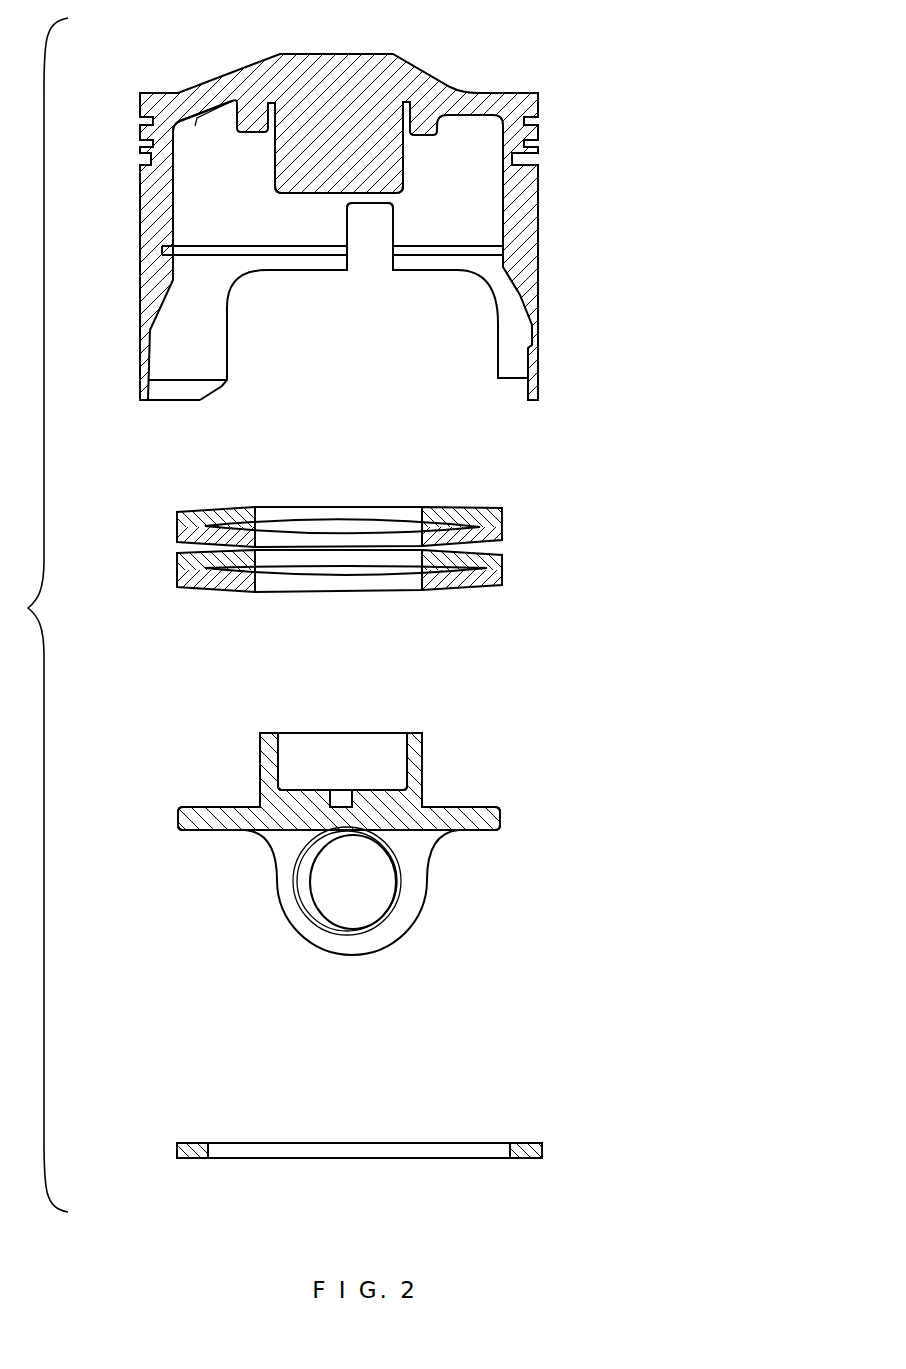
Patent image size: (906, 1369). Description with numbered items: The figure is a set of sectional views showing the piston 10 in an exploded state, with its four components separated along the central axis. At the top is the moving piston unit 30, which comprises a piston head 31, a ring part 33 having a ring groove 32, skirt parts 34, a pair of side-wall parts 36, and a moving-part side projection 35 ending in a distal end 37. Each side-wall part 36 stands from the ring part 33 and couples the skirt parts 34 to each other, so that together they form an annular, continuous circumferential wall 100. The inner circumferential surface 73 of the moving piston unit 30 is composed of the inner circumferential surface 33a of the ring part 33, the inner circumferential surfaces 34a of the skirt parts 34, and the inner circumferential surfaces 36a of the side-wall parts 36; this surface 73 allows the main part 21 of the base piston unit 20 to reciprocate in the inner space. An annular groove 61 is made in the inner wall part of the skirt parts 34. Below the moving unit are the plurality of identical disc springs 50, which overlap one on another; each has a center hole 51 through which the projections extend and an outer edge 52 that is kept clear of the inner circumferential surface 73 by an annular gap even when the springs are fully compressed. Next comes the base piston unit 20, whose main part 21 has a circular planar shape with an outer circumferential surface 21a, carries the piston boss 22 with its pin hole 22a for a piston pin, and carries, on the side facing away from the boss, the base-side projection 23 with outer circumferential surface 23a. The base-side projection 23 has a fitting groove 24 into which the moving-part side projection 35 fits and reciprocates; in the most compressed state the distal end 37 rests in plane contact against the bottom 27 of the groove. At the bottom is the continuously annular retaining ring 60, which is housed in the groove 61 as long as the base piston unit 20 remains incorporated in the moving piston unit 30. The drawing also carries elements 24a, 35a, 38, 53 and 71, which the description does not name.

The piston 10 is at (360, 535).
The base piston unit 20 is at (338, 839).
The main part 21 is at (492, 821).
The outer circumferential surface 21a is at (502, 815).
The piston boss 22 is at (378, 942).
The pin hole 22a is at (348, 928).
The base-side projection 23 is at (418, 750).
The outer circumferential surface 23a is at (260, 757).
The fitting groove 24 is at (335, 740).
The inner wall surface 24a is at (400, 755).
The bottom 27 is at (300, 788).
The moving piston unit 30 is at (548, 220).
The piston head 31 is at (323, 57).
The ring groove 32 is at (149, 143).
The ring part 33 is at (151, 160).
The inner circumferential surface 33a is at (176, 137).
The skirt parts 34 is at (140, 237).
The inner circumferential surfaces 34a is at (174, 199).
The moving-part side projection 35 is at (330, 150).
The side surface of central portion 35a is at (405, 162).
The side-wall parts 36 is at (457, 264).
The inner circumferential surfaces 36a is at (408, 231).
The distal end 37 is at (297, 196).
The skirt portion 38 is at (140, 202).
The disc springs 50 is at (478, 538).
The holes 51 is at (350, 588).
The outer edge 52 is at (503, 570).
The joint portion 53 is at (423, 550).
The retaining ring 60 is at (519, 1143).
The groove 61 is at (303, 249).
The upper surface of flange 71 is at (193, 800).
The inner circumferential surface 73 is at (174, 227).
The circumferential wall 100 is at (534, 241).